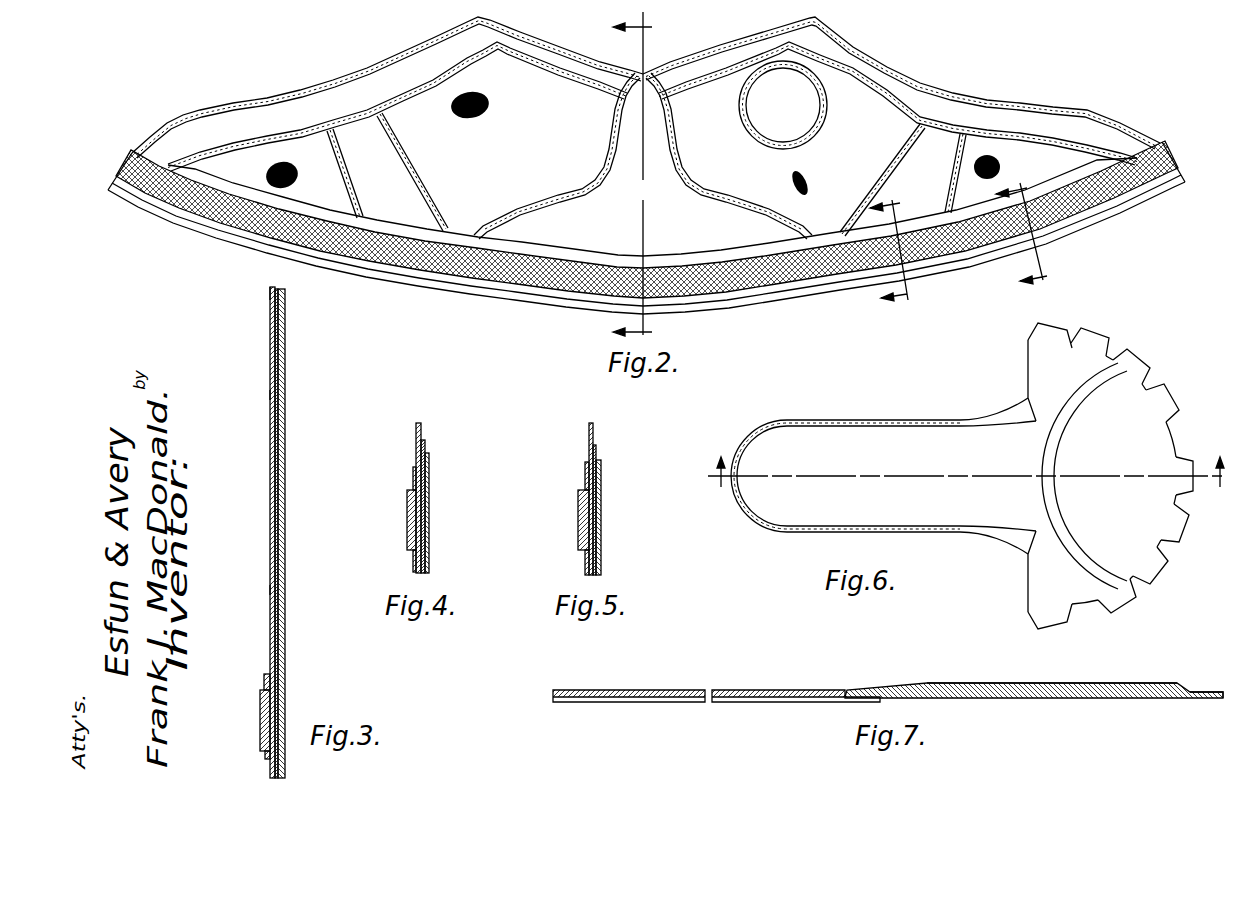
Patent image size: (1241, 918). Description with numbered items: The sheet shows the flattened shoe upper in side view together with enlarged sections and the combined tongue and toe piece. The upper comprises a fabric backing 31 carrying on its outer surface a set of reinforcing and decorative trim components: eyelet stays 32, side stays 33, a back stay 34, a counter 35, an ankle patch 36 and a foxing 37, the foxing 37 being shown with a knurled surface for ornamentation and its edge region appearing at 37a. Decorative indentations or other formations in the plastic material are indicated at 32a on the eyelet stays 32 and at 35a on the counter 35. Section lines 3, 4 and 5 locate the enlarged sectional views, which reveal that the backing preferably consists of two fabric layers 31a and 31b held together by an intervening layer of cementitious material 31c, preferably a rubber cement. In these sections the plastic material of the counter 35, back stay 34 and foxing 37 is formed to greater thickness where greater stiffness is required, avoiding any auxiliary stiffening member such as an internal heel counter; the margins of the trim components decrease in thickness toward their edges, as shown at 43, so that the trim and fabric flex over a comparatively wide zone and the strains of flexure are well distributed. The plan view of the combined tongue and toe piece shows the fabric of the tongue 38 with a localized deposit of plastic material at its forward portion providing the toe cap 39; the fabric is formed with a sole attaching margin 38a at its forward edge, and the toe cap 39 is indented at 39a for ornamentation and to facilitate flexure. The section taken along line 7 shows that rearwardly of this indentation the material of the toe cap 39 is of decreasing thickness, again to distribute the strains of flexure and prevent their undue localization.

In FIG. 2, the fabric backing 31 is at (507, 62).
In FIG. 3, the fabric layer 31a is at (285, 328).
In FIG. 4, the fabric layer 31a is at (421, 424).
In FIG. 5, the fabric layer 31a is at (593, 434).
In FIG. 3, the fabric layer 31b is at (285, 387).
In FIG. 4, the fabric layer 31b is at (429, 455).
In FIG. 5, the fabric layer 31b is at (601, 472).
In FIG. 3, the cementitious material 31c is at (278, 355).
In FIG. 4, the cementitious material 31c is at (425, 441).
In FIG. 5, the cementitious material 31c is at (596, 455).
In FIG. 2, the eyelet stays 32 is at (306, 102).
In FIG. 3, the eyelet stays 32 is at (270, 296).
In FIG. 2, the indentations 32a is at (197, 110).
In FIG. 2, the side stays 33 is at (383, 207).
In FIG. 2, the back stay 34 is at (635, 105).
In FIG. 3, the back stay 34 is at (270, 395).
In FIG. 2, the counter 35 is at (568, 233).
In FIG. 3, the counter 35 is at (270, 590).
In FIG. 2, the indentations 35a is at (757, 207).
In FIG. 2, the ankle patch 36 is at (790, 92).
In FIG. 2, the foxing 37 is at (212, 222).
In FIG. 3, the foxing 37 is at (262, 707).
In FIG. 4, the foxing 37 is at (407, 515).
In FIG. 5, the foxing 37 is at (578, 525).
In FIG. 2, the welt edge 37a is at (275, 257).
In FIG. 3, the welt edge 37a is at (268, 760).
In FIG. 4, the welt edge 37a is at (413, 561).
In FIG. 5, the welt edge 37a is at (585, 565).
In FIG. 2, the margin of decreasing thickness 43 is at (760, 250).
In FIG. 3, the margin of decreasing thickness 43 is at (265, 676).
In FIG. 4, the margin of decreasing thickness 43 is at (413, 473).
In FIG. 5, the margin of decreasing thickness 43 is at (585, 475).
In FIG. 6, the tongue 38 is at (873, 453).
In FIG. 7, the tongue 38 is at (770, 690).
In FIG. 6, the sole attaching margin 38a is at (1127, 573).
In FIG. 7, the sole attaching margin 38a is at (1203, 692).
In FIG. 6, the toe piece 39 is at (1143, 448).
In FIG. 7, the toe piece 39 is at (1135, 683).
In FIG. 6, the indentation 39a is at (1107, 393).
In FIG. 7, the indentation 39a is at (1048, 686).
In FIG. 2, the section line 3- 3 is at (642, 178).
In FIG. 2, the section line 4- 4 is at (896, 253).
In FIG. 2, the section line 5- 5 is at (1029, 228).
In FIG. 6, the section line 7- 7 is at (966, 483).